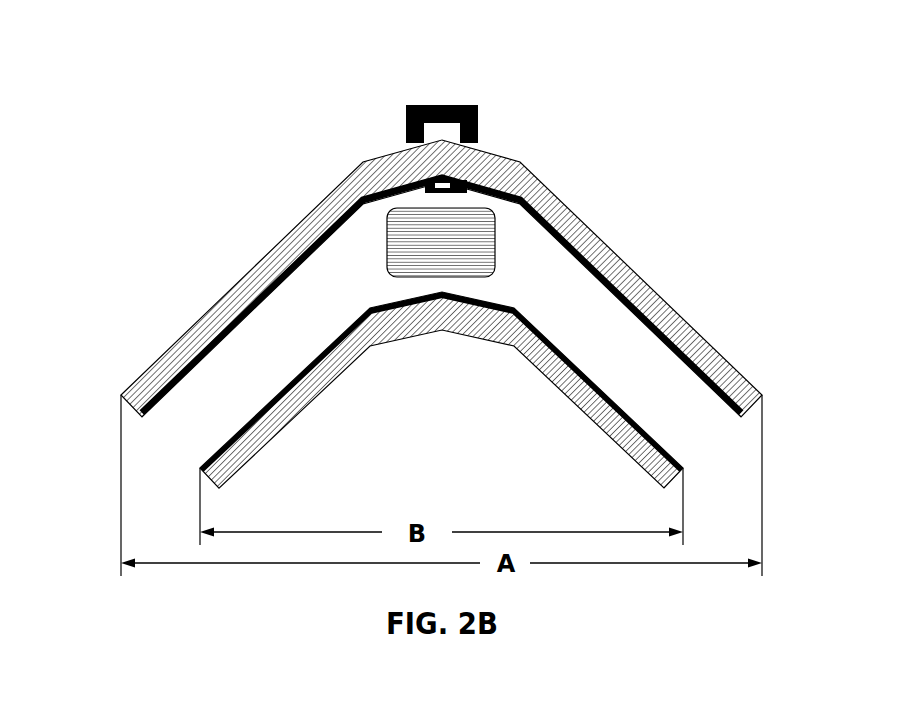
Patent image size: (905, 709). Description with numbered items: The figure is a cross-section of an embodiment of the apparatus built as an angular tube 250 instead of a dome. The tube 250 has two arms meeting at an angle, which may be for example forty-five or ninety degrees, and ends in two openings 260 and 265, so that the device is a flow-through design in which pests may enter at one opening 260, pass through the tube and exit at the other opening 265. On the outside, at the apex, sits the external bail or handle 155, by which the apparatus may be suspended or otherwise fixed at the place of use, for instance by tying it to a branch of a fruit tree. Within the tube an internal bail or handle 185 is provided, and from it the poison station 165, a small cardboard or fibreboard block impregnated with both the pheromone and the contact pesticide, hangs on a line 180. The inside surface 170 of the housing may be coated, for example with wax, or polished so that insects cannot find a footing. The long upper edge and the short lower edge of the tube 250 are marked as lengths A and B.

The external bail or handle 155 is at (442, 105).
The poison station 165 is at (413, 244).
The inside surface of the dome 170 is at (268, 298).
The line 180 is at (442, 198).
The internal bail or handle 185 is at (470, 189).
The angular tube 250 is at (490, 402).
The opening 260 is at (185, 451).
The opening 265 is at (697, 455).